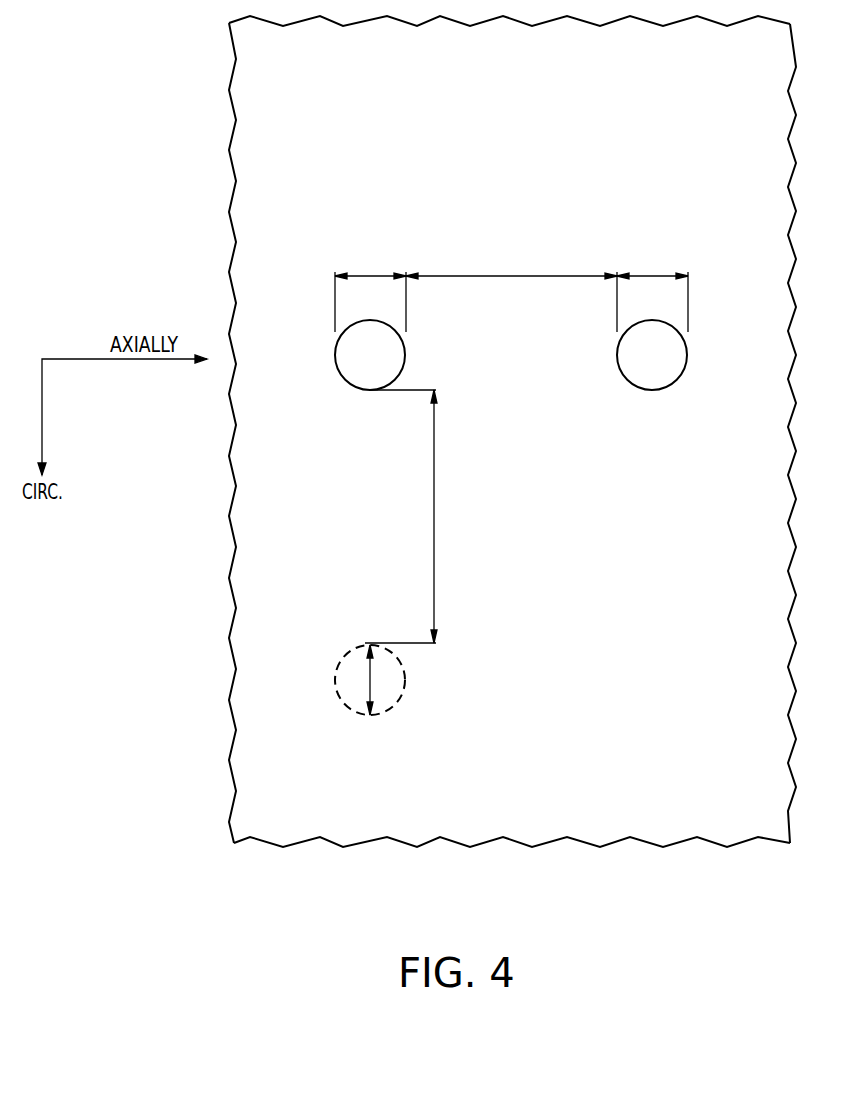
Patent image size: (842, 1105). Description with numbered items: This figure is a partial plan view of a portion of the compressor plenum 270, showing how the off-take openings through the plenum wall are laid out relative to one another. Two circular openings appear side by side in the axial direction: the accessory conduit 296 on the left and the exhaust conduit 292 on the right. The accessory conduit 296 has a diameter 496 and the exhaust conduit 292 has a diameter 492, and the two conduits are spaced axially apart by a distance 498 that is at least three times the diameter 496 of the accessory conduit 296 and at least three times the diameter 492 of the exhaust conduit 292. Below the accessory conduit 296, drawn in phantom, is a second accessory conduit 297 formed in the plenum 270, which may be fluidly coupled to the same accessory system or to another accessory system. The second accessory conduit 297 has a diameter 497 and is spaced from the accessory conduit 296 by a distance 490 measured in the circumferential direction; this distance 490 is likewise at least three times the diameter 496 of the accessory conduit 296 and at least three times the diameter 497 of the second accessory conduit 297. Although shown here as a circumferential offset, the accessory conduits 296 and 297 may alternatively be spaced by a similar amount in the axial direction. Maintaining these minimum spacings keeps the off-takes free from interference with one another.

The plenum 270 is at (250, 768).
The exhaust conduit 292 is at (652, 390).
The accessory conduit 296 is at (370, 390).
The second accessory conduit 297 is at (358, 713).
The distance 490 is at (436, 515).
The diameter of the exhaust conduit 492 is at (651, 275).
The diameter of the accessory conduit 496 is at (371, 275).
The diameter of the second accessory conduit 497 is at (372, 680).
The distance 498 is at (511, 275).